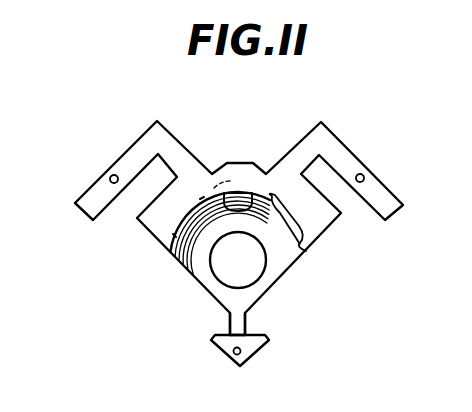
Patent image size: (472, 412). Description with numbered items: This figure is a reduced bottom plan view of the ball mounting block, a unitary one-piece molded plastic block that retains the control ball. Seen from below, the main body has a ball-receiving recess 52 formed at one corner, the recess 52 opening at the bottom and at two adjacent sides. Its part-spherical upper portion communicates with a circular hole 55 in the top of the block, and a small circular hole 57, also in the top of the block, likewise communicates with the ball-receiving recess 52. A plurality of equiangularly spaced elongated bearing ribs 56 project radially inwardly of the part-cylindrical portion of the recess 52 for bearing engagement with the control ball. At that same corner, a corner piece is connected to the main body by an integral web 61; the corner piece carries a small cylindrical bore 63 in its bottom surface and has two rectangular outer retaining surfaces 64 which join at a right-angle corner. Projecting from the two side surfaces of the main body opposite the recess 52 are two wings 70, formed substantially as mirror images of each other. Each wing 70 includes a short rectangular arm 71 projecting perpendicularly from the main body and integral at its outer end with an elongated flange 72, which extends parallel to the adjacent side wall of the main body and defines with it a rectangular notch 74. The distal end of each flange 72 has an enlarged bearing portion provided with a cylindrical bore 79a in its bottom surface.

The wing 70 is at (134, 136).
The rectangular arm 71 is at (175, 158).
The cylindrical bore 79a is at (112, 176).
The elongated flange 72 is at (92, 202).
The rectangular notch 74 is at (142, 189).
The ball-receiving recess 52 is at (202, 252).
The small circular hole 57 is at (242, 207).
The bearing rib 56 is at (310, 249).
The circular hole 55 is at (262, 272).
The integral web 61 is at (246, 322).
The cylindrical bore 63 is at (233, 352).
The outer retaining surface 64 is at (258, 353).